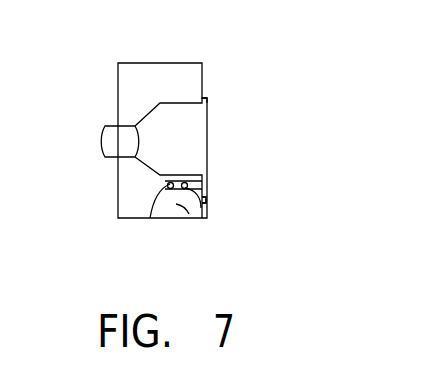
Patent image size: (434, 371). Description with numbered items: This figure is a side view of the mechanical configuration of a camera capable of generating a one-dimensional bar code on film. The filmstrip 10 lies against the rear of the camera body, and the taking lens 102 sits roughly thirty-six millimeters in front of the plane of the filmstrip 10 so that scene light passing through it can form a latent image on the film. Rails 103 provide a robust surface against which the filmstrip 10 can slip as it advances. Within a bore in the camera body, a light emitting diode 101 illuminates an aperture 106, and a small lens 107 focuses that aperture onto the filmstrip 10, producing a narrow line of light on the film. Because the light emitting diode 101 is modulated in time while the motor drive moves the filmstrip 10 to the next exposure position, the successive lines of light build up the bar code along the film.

The filmstrip 10 is at (207, 150).
The light emitting diode 101 is at (150, 218).
The lens 102 is at (101, 141).
The rails 103 is at (207, 100).
The aperture 106 is at (189, 214).
The lens 107 is at (207, 209).